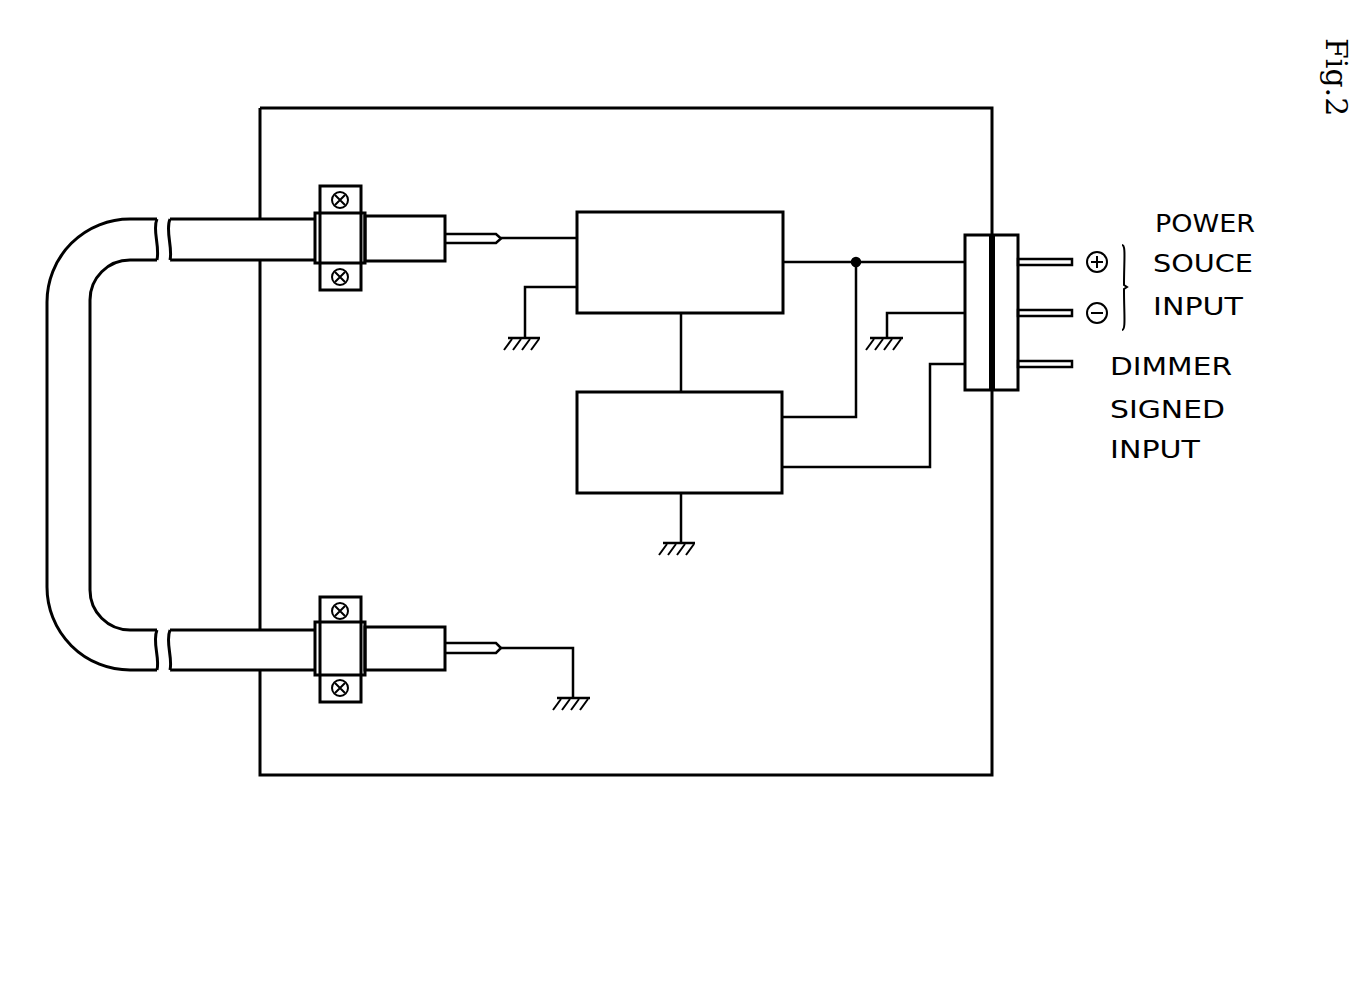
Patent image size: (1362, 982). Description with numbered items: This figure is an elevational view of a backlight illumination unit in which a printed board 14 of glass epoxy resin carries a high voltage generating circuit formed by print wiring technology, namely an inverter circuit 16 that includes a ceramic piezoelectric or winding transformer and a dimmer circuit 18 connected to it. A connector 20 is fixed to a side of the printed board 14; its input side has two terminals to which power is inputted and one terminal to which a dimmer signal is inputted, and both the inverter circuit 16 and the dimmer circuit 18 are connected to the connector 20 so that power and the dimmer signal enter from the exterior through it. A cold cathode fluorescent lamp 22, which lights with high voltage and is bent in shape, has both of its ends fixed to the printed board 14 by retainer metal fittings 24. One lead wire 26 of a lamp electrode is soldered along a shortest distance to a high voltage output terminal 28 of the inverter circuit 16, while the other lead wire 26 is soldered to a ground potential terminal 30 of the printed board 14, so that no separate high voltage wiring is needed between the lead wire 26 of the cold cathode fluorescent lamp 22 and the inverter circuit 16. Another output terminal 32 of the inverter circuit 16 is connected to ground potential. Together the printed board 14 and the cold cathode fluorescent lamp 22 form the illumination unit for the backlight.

The printed board 14 is at (992, 637).
The inverter circuit 16 is at (783, 212).
The dimmer circuit 18 is at (577, 460).
The connector 20 is at (1008, 392).
The cold cathode fluorescent lamp 22 is at (200, 232).
The retainer metal fittings 24 is at (332, 291).
The lead wire 26 is at (472, 240).
The high voltage output terminal 28 is at (502, 235).
The ground potential terminal 30 is at (503, 647).
The output terminal 32 is at (520, 332).